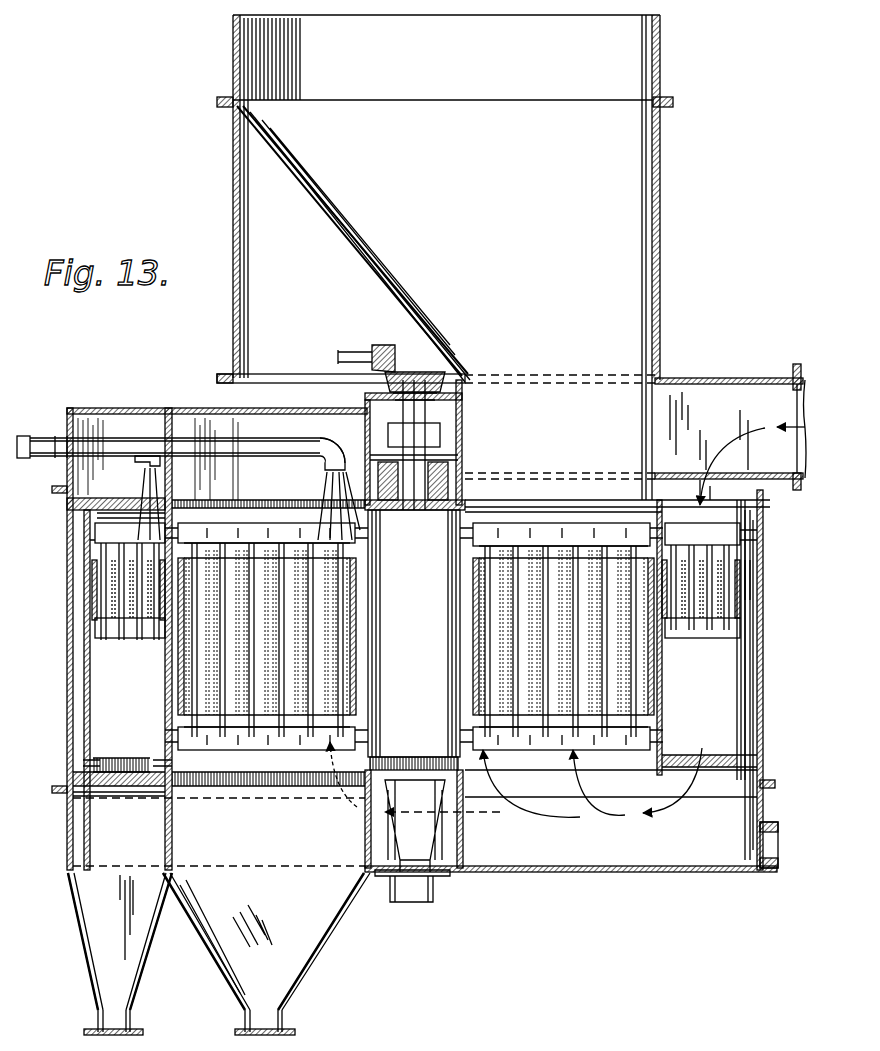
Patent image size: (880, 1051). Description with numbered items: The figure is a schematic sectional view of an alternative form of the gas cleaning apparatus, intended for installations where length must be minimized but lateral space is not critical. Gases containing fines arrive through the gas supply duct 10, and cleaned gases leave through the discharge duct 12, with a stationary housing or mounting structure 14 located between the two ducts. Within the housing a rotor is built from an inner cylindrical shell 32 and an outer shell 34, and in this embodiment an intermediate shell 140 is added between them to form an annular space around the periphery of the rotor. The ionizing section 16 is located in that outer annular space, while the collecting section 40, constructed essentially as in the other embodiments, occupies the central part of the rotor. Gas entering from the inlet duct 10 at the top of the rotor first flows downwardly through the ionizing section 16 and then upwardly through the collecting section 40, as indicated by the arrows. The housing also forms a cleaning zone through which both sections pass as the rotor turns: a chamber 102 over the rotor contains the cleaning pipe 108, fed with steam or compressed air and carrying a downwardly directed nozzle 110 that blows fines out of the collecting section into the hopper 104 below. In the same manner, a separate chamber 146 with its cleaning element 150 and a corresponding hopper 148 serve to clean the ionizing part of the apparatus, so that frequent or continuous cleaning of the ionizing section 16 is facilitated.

The gas supply duct 10 is at (707, 400).
The discharge duct 12 is at (652, 226).
The stationary housing or mounting structure 14 is at (88, 393).
The ionizing section 16 is at (712, 606).
The inner cylindrical shell 32 is at (476, 603).
The outer shell 34 is at (743, 697).
The collecting section 40 is at (522, 585).
The chamber 102 is at (206, 416).
The hopper 104 is at (300, 946).
The cleaning pipe 108 is at (258, 447).
The nozzle 110 is at (346, 440).
The intermediate shell 140 is at (662, 670).
The chamber 146 is at (105, 425).
The hopper 148 is at (122, 986).
The cleaning element 150 is at (141, 440).